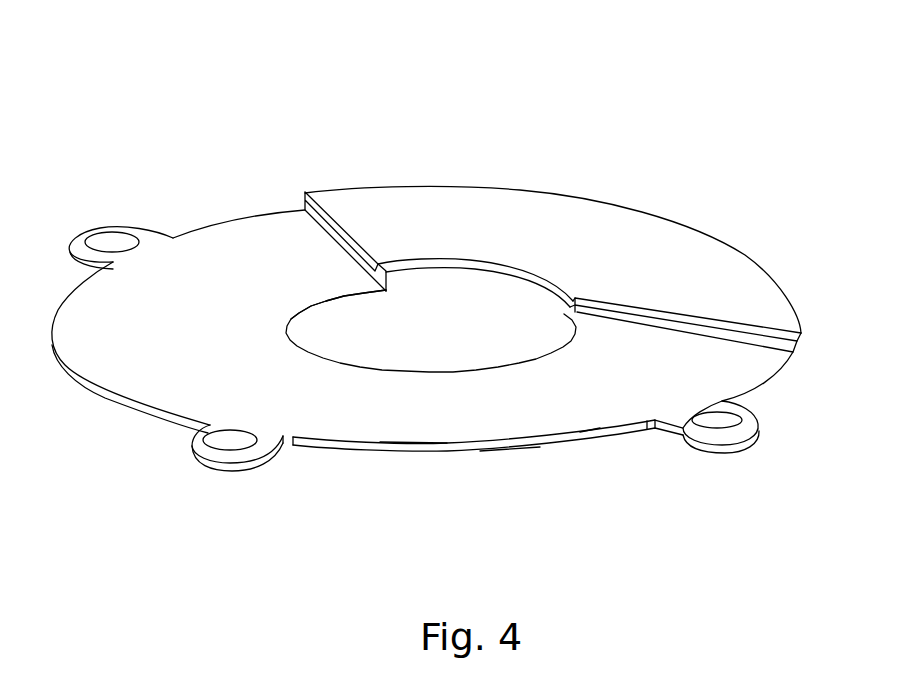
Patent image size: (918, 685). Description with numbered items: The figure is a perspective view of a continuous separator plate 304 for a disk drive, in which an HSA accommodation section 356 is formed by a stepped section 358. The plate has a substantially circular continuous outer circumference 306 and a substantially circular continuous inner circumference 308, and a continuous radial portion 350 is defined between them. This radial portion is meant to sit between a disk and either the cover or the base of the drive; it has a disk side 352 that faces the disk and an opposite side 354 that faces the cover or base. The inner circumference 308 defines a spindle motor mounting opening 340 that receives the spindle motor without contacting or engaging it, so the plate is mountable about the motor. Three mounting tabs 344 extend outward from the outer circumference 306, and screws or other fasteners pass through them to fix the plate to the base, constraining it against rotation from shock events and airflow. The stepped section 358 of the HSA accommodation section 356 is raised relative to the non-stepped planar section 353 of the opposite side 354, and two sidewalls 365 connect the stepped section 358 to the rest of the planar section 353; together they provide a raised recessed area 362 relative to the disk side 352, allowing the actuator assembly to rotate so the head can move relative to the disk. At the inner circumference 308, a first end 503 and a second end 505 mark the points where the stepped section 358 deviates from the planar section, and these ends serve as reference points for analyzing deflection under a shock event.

The continuous separator plate 304 is at (258, 125).
The substantially circular continuous outer circumference 306 is at (100, 387).
The substantially circular continuous inner circumference 308 is at (313, 298).
The spindle motor mounting opening 340 is at (392, 328).
The mounting tabs 344 is at (75, 243).
The continuous radial portion 350 is at (413, 420).
The disk side 352 is at (515, 462).
The non-stepped planar section 353 is at (590, 392).
The opposite side 354 is at (540, 422).
The HSA accommodation section 356 is at (805, 343).
The stepped section 358 is at (665, 247).
The raised recessed area 362 is at (800, 335).
The sidewalls 365 is at (355, 250).
The first end 503 is at (388, 285).
The second end 505 is at (575, 312).